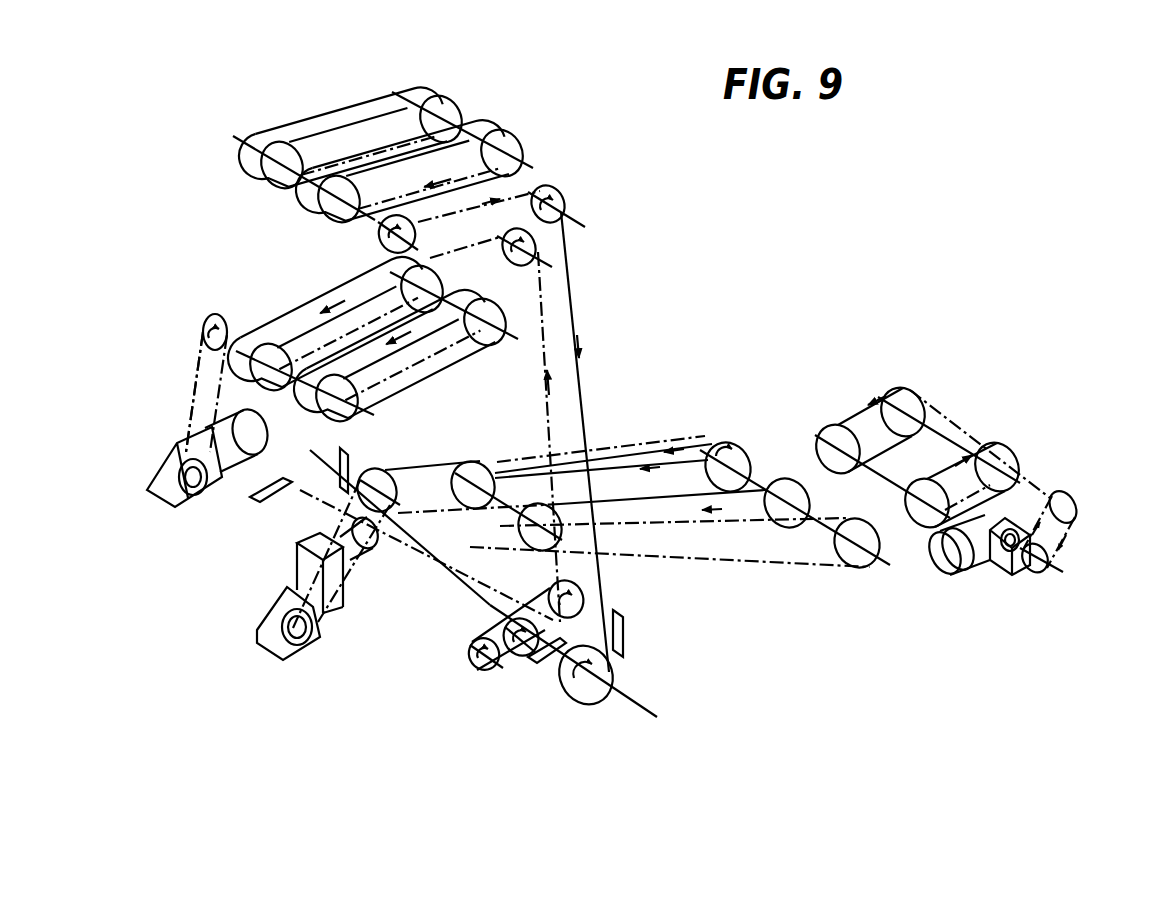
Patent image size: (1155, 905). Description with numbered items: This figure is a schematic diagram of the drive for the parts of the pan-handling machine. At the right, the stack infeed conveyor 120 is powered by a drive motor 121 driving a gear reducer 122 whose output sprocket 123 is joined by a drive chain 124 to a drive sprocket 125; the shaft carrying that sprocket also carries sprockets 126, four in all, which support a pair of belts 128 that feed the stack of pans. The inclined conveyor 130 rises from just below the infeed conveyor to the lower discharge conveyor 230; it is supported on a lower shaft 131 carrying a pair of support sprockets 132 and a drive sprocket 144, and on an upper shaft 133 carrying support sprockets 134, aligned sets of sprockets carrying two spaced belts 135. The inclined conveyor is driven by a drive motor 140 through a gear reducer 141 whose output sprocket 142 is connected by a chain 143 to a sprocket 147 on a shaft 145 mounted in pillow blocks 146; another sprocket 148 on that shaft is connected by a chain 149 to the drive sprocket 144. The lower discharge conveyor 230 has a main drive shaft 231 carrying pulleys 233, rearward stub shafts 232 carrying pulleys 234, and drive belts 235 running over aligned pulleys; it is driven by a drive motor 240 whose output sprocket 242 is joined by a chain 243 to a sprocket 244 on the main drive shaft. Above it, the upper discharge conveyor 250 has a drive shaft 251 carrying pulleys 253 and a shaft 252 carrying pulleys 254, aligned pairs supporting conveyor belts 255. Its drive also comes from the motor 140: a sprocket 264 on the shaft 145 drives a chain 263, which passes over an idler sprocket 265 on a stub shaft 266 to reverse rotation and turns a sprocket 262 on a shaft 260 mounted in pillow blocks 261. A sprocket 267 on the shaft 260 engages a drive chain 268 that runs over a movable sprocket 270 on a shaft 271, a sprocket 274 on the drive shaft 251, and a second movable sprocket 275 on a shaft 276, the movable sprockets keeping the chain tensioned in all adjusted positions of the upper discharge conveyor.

The stack infeed conveyor 120 is at (967, 583).
The drive motor 121 is at (973, 568).
The gear reducer 122 is at (993, 523).
The output sprocket 123 is at (1027, 573).
The drive chain 124 is at (1070, 530).
The drive sprocket 125 is at (1073, 497).
The sprockets 126 is at (818, 447).
The belts 128 is at (860, 408).
The inclined conveyor 130 is at (631, 440).
The lower shaft 131 is at (710, 447).
The support sprockets 132 is at (812, 499).
The upper shaft 133 is at (493, 467).
The support sprockets 134 is at (448, 476).
The belt 135 is at (603, 470).
The drive motor 140 is at (297, 559).
The gear reducer 141 is at (287, 593).
The output sprocket 142 is at (290, 650).
The chain 143 is at (314, 619).
The drive sprocket 144 is at (750, 450).
The shaft 145 is at (438, 532).
The pillow blocks 146 is at (347, 452).
The sprocket 147 is at (378, 467).
The sprocket 148 is at (377, 535).
The chain 149 is at (428, 472).
The lower discharge conveyor 230 is at (255, 280).
The main drive shaft 231 is at (204, 333).
The stub shafts 232 is at (438, 297).
The pulleys 233 is at (267, 343).
The pulleys 234 is at (387, 283).
The drive belt 235 is at (330, 303).
The drive motor 240 is at (238, 433).
The output sprocket 242 is at (190, 510).
The chain 243 is at (193, 400).
The sprocket 244 is at (210, 320).
The upper discharge conveyor 250 is at (303, 99).
The drive shaft 251 is at (235, 138).
The shaft 252 is at (394, 90).
The pulleys 253 is at (297, 193).
The pulleys 254 is at (531, 168).
The conveyor belts 255 is at (375, 109).
The shaft 260 is at (633, 703).
The pillow blocks 261 is at (250, 500).
The sprocket 262 is at (520, 661).
The chain 263 is at (503, 630).
The sprocket 264 is at (548, 593).
The idler sprocket 265 is at (469, 652).
The stub shaft 266 is at (500, 662).
The sprocket 267 is at (612, 675).
The drive chain 268 is at (580, 315).
The movable sprocket 270 is at (562, 200).
The shaft 271 is at (584, 226).
The sprocket 274 is at (415, 236).
The second movable sprocket 275 is at (522, 266).
The shaft 276 is at (553, 267).